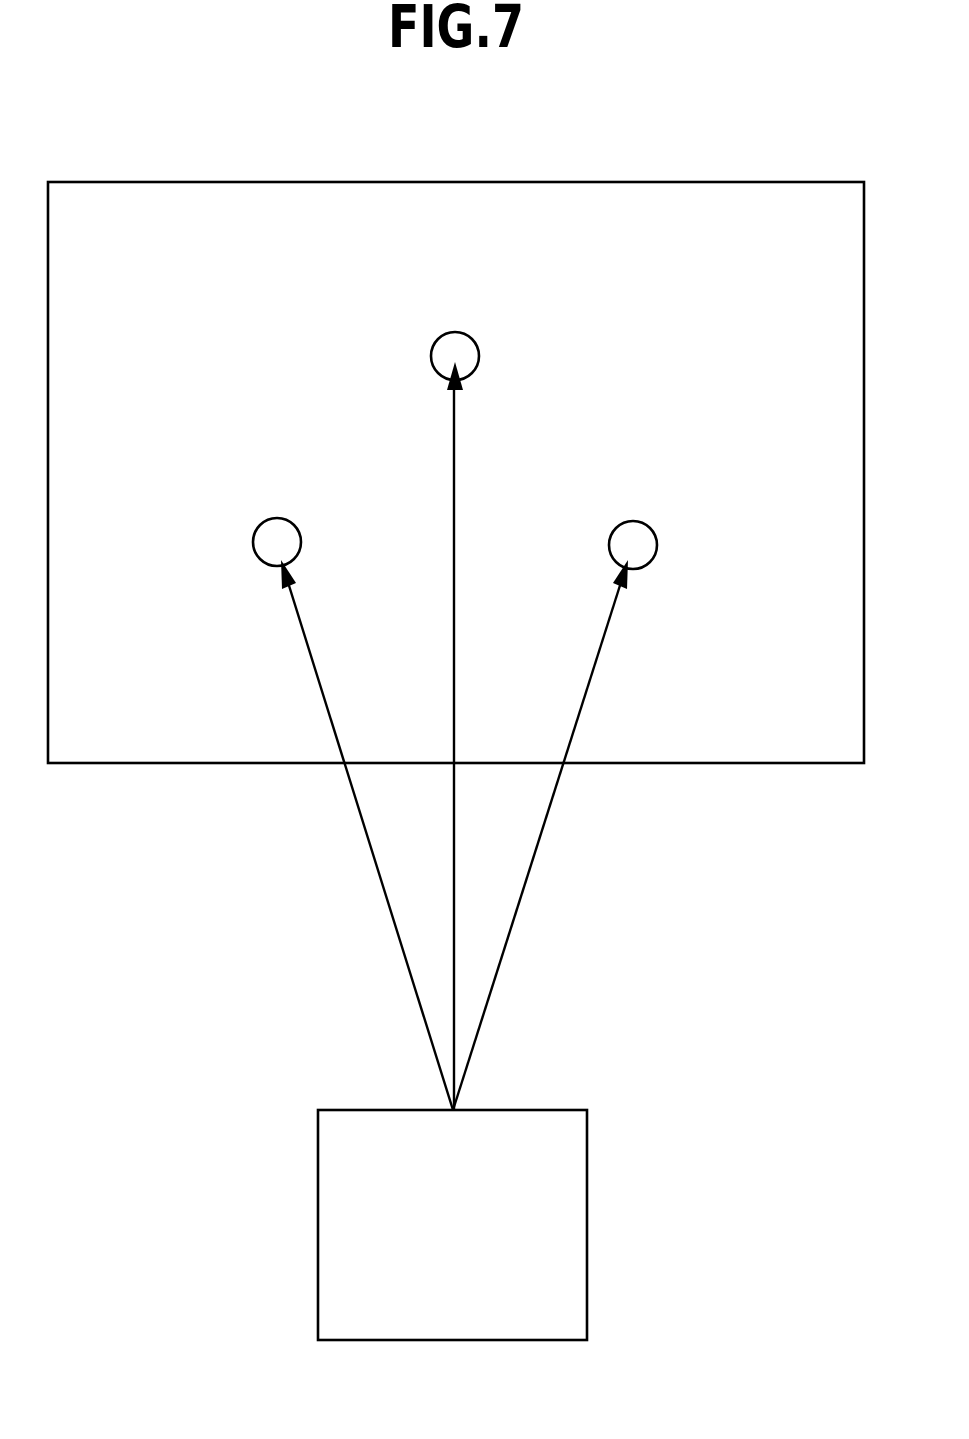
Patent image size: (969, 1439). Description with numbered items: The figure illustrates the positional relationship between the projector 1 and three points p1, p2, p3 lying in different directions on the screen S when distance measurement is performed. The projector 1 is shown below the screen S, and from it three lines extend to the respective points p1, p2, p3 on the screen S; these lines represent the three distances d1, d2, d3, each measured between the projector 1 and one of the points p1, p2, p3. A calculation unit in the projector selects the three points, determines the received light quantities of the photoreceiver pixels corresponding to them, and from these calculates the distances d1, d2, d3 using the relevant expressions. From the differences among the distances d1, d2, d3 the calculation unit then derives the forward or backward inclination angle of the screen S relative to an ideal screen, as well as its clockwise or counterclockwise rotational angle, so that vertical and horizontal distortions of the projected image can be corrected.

The screen S is at (785, 182).
The projector 1 is at (559, 1110).
The point p1 is at (455, 332).
The point p2 is at (276, 518).
The point p3 is at (632, 521).
The distance d1 is at (438, 736).
The distance d2 is at (367, 835).
The distance d3 is at (540, 835).